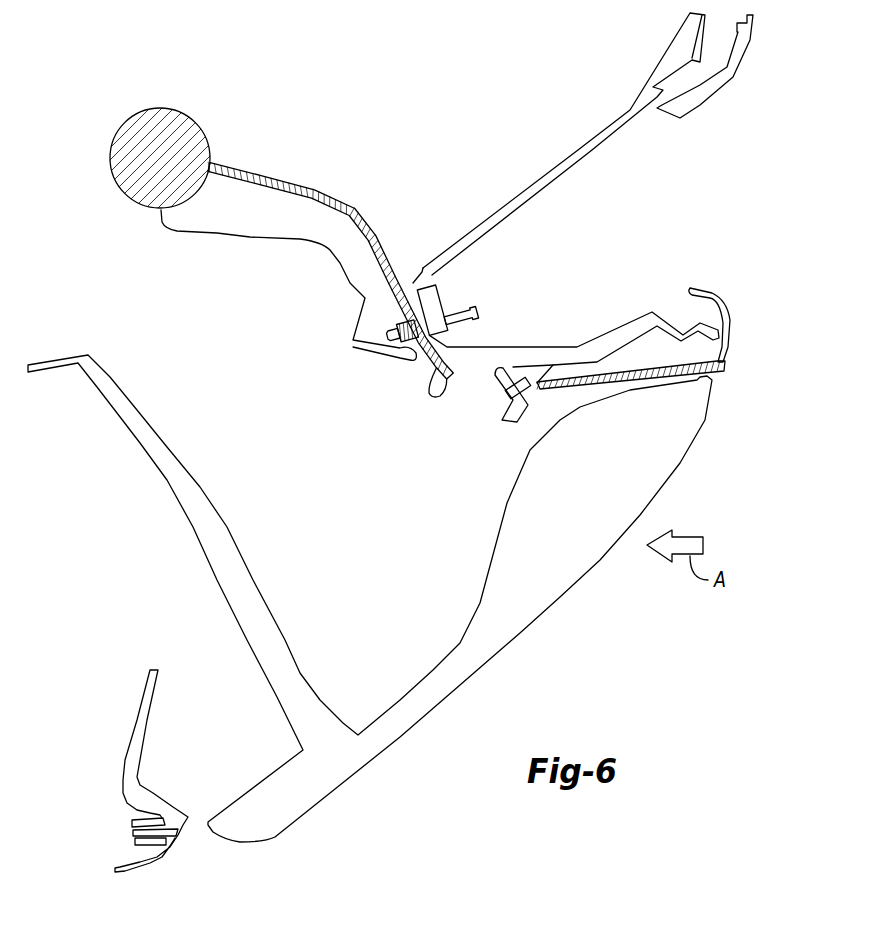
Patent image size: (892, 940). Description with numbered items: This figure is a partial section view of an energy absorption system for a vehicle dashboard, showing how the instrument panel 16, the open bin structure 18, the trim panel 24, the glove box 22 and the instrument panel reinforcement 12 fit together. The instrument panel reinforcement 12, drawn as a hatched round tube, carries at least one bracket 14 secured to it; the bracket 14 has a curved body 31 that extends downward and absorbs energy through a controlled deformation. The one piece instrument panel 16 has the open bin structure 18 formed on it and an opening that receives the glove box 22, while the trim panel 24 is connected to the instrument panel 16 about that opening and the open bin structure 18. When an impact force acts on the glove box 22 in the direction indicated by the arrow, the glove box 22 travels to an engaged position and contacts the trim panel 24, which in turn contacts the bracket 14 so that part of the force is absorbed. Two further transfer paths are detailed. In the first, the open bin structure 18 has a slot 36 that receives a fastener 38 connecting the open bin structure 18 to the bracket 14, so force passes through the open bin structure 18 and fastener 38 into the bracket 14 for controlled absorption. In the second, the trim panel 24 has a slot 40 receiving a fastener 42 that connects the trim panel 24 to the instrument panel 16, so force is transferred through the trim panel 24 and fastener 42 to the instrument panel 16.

The instrument panel reinforcement 12 is at (197, 122).
The bracket 14 is at (243, 237).
The instrument panel 16 is at (655, 311).
The open bin structure 18 is at (482, 274).
The glove box structure 22 is at (686, 462).
The trim panel 24 is at (731, 327).
The curved body 31 is at (340, 262).
The slot 36 is at (410, 290).
The fastener 38 is at (447, 307).
The slot 40 is at (533, 400).
The fastener 42 is at (508, 388).